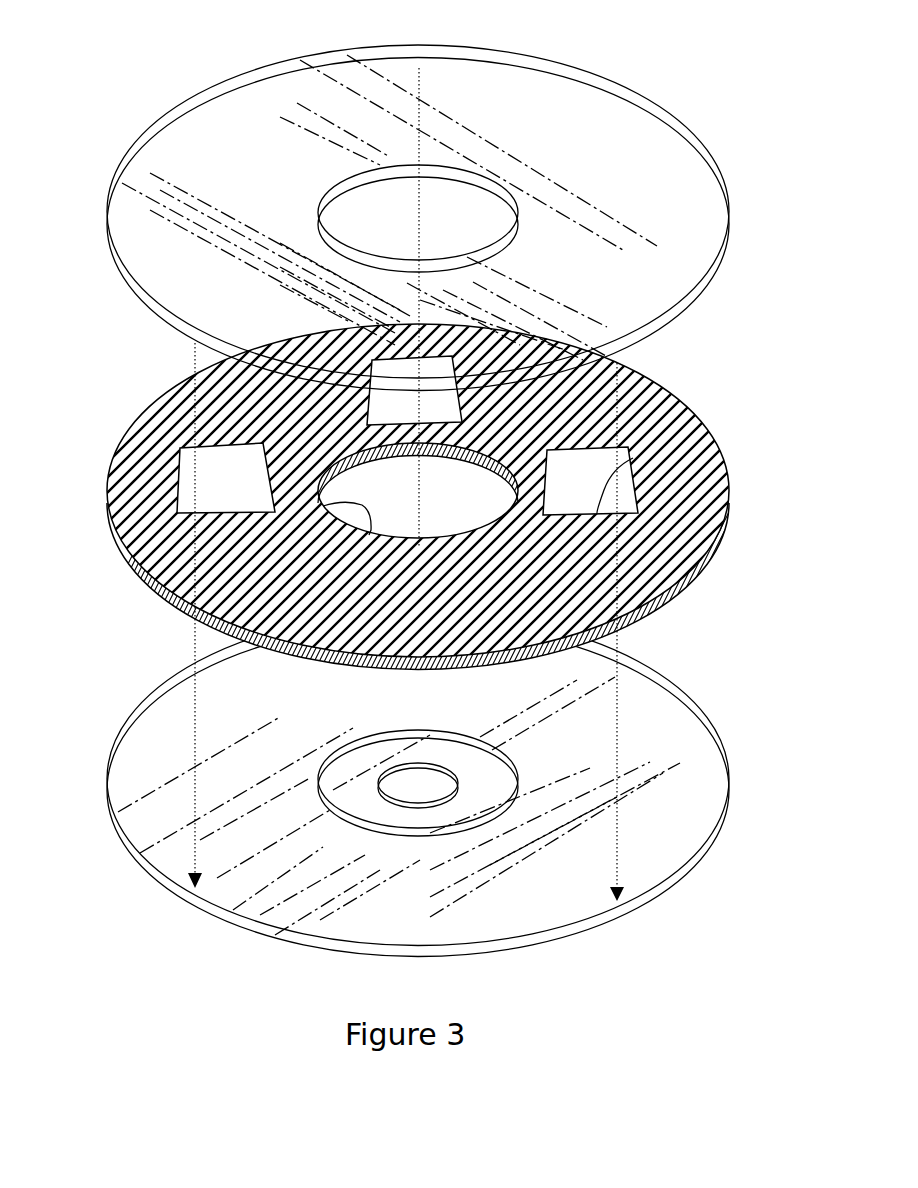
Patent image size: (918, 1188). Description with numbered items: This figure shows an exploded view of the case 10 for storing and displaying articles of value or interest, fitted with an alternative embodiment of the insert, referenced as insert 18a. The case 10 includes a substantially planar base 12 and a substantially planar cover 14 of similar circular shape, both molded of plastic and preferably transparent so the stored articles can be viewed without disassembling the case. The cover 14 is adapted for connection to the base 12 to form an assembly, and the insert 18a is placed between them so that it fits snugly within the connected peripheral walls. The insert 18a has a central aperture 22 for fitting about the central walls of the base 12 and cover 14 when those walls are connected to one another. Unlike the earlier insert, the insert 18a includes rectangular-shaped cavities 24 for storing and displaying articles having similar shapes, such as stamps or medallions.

The case 10 is at (459, 492).
The base 12 is at (683, 888).
The cover 14 is at (667, 95).
The insert 18a is at (459, 470).
The central aperture 22 is at (143, 580).
The rectangular-shaped cavities 24 is at (638, 456).